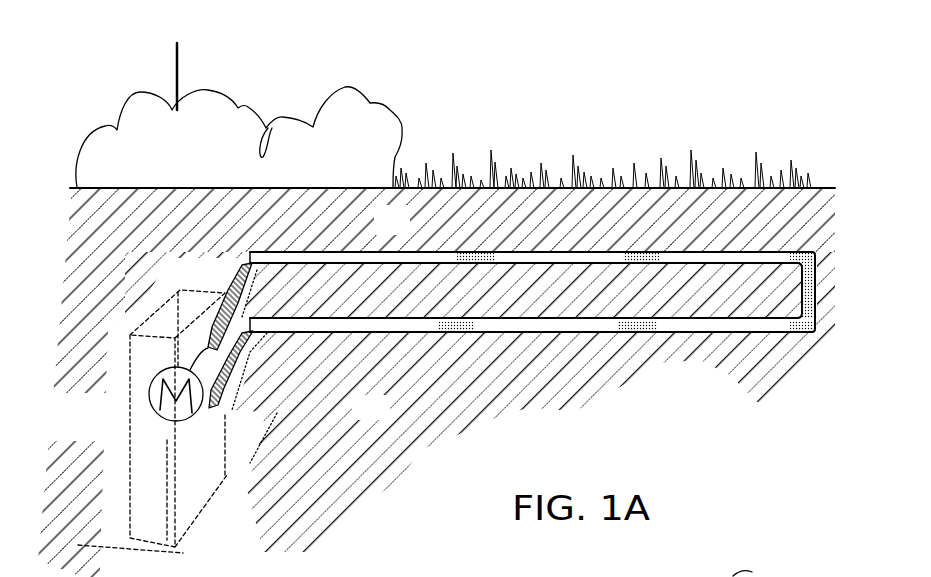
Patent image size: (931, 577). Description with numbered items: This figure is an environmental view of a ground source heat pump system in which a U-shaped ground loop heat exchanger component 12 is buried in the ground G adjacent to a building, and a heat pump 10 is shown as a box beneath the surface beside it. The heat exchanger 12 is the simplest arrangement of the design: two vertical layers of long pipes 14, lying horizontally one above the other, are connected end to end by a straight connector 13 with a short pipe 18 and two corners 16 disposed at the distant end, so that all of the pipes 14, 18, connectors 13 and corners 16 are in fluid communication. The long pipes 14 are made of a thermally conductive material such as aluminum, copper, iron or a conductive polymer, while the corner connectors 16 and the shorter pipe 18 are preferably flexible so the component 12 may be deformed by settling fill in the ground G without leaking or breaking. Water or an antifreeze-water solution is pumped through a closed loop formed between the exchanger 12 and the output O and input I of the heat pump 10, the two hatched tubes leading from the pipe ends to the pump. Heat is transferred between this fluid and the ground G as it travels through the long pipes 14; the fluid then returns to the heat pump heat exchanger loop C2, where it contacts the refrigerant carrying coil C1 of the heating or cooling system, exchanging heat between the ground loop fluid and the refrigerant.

The heat pump 10 is at (217, 470).
The ground loop heat exchanger component 12 is at (656, 370).
The straight connector 13 is at (642, 334).
The long pipe 14 is at (433, 251).
The corner connector 16 is at (806, 250).
The short pipe 18 is at (818, 300).
The refrigerant carrying coil C1 is at (155, 420).
The heat pump heat exchanger loop C2 is at (150, 400).
The ground G is at (386, 416).
The input of the heat pump I is at (222, 296).
The output of the heat pump O is at (231, 400).